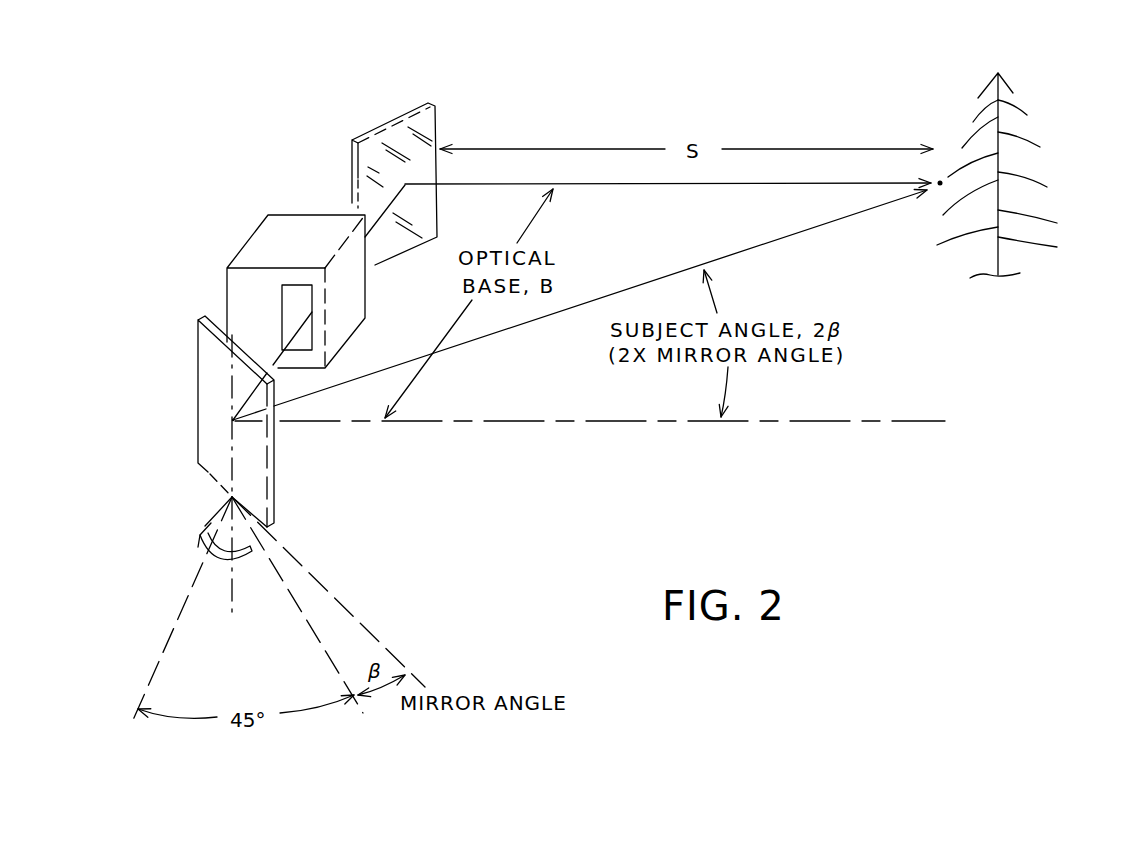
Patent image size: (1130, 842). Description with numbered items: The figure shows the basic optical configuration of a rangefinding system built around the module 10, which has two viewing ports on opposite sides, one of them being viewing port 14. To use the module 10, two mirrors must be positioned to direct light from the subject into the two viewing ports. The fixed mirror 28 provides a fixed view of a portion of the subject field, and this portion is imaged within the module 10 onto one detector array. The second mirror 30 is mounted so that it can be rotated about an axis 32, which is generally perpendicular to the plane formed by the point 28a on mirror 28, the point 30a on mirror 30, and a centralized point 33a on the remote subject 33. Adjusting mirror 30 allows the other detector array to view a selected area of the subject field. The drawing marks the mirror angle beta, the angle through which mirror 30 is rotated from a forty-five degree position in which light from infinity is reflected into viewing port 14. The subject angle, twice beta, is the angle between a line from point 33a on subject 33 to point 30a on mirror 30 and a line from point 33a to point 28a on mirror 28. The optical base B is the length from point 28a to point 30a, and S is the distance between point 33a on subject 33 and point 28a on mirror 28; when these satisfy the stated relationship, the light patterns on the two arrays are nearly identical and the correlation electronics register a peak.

The module 10 is at (267, 213).
The viewing port 14 is at (297, 303).
The fixed mirror 28 is at (385, 124).
The point on mirror 28 28a is at (405, 186).
The rotatable mirror 30 is at (198, 368).
The point on mirror 30 30a is at (236, 425).
The axis of rotation 32 is at (232, 577).
The remote subject 33 is at (1038, 175).
The centralized point on subject 33a is at (940, 186).